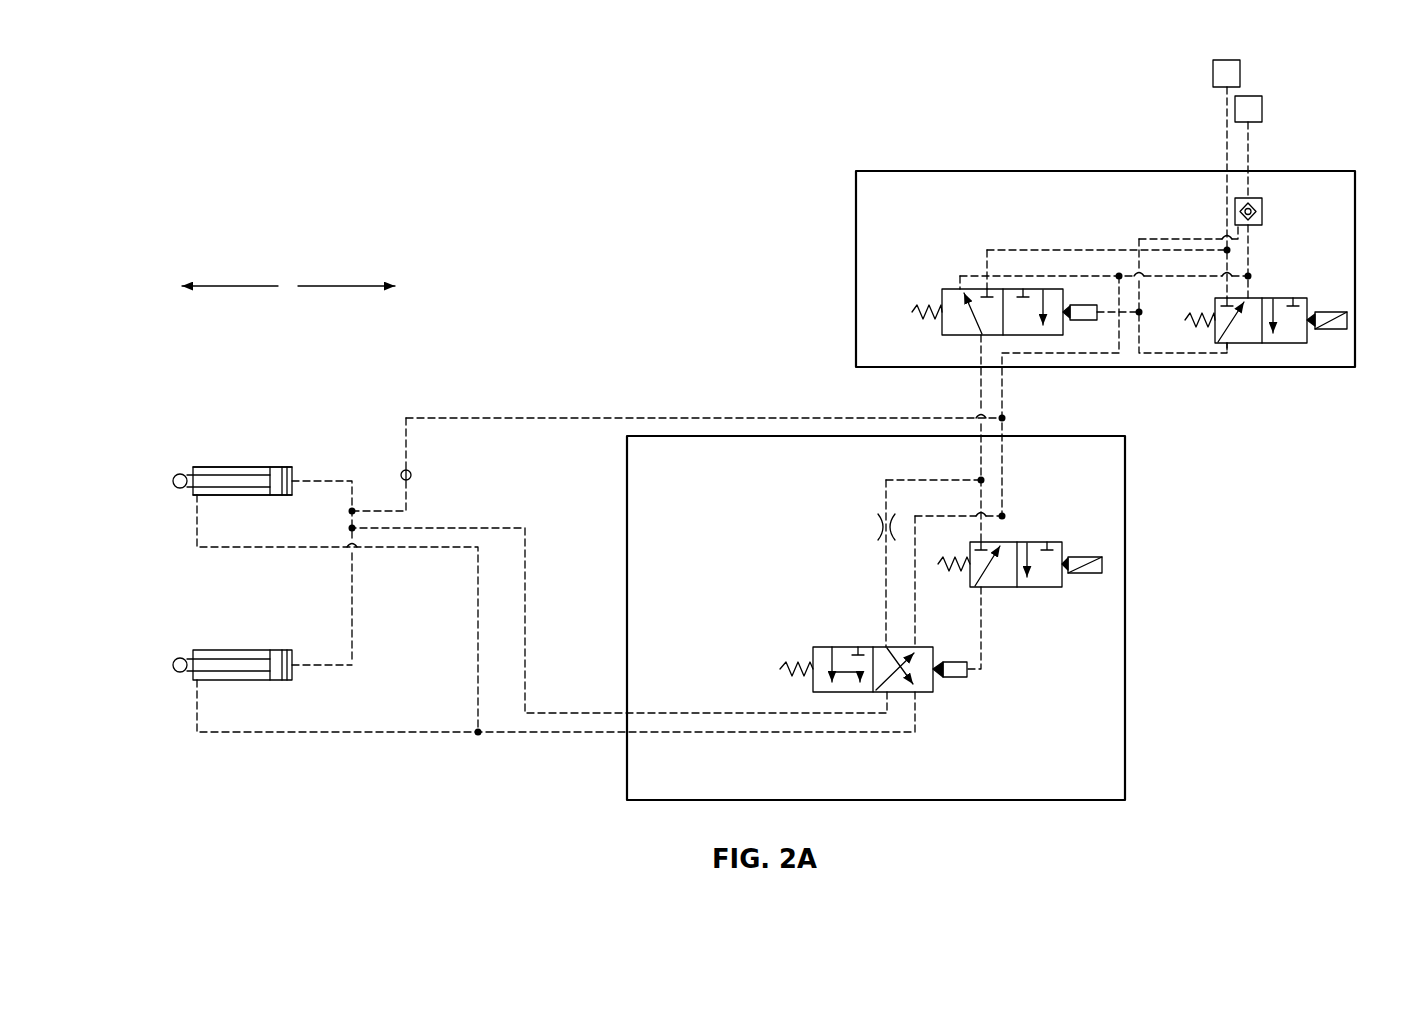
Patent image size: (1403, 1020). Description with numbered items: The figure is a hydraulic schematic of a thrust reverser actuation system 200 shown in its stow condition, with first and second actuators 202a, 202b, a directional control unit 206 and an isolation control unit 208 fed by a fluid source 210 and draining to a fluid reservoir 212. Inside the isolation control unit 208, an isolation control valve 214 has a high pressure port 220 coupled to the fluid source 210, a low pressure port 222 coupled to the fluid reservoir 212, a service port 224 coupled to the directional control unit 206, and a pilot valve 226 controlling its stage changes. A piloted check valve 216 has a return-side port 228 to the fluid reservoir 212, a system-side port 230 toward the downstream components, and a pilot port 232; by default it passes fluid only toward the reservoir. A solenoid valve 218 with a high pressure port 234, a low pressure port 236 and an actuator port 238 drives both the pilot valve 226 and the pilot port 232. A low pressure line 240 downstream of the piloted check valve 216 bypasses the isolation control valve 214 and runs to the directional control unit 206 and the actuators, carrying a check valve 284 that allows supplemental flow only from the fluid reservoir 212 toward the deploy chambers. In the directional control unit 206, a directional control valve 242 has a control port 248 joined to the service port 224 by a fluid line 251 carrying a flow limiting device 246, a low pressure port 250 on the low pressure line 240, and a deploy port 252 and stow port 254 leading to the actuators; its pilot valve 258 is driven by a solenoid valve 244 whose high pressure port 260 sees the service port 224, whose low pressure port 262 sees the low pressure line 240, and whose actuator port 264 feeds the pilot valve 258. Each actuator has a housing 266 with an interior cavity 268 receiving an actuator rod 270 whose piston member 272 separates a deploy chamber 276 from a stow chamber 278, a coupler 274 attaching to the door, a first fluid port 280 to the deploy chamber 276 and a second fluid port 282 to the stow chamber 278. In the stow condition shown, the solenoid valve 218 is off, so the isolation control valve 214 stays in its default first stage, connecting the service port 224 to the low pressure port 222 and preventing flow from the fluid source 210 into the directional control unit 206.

The thrust reverser actuation system 200 is at (520, 133).
The first actuator 202a is at (303, 529).
The second actuator 202b is at (201, 647).
The directional control unit 206 is at (1130, 467).
The isolation control unit 208 is at (1032, 168).
The fluid source 210 is at (1228, 60).
The fluid reservoir 212 is at (1262, 108).
The isolation control valve 214 is at (1010, 301).
The piloted check valve 216 is at (1264, 192).
The solenoid valve 218 is at (1266, 363).
The high pressure port 220 is at (960, 290).
The low pressure port 222 is at (985, 290).
The service port 224 is at (982, 336).
The pilot valve 226 is at (1082, 321).
The return-side port 228 is at (1260, 194).
The system-side port 230 is at (1248, 227).
The pilot port 232 is at (1237, 226).
The high pressure port 234 is at (1227, 298).
The low pressure port 236 is at (1248, 298).
The actuator port 238 is at (1227, 345).
The low pressure line 240 is at (1103, 353).
The directional control valve 242 is at (616, 657).
The solenoid valve 244 is at (1016, 591).
The flow limiting device 246 is at (878, 532).
The control port 248 is at (887, 647).
The low pressure port 250 is at (915, 647).
The fluid line 251 is at (886, 498).
The deploy port 252 is at (887, 695).
The stow port 254 is at (915, 695).
The pilot valve 258 is at (957, 678).
The high pressure port 260 is at (981, 542).
The low pressure port 262 is at (1002, 537).
The actuator port 264 is at (983, 590).
The housing 266 is at (257, 495).
The interior cavity 268 is at (220, 466).
The actuator rod 270 is at (243, 480).
The piston member 272 is at (283, 467).
The coupler 274 is at (178, 475).
The deploy chamber 276 is at (290, 468).
The stow chamber 278 is at (230, 498).
The first fluid port 280 is at (293, 480).
The second fluid port 282 is at (195, 500).
The check valve 284 is at (408, 470).